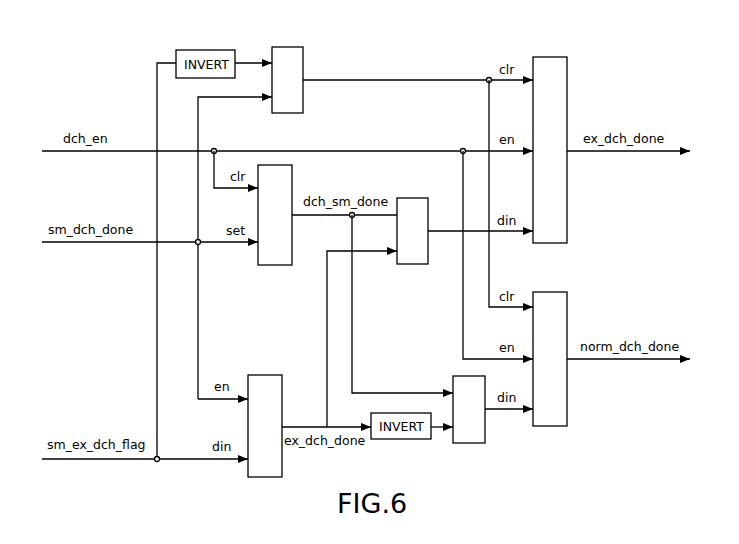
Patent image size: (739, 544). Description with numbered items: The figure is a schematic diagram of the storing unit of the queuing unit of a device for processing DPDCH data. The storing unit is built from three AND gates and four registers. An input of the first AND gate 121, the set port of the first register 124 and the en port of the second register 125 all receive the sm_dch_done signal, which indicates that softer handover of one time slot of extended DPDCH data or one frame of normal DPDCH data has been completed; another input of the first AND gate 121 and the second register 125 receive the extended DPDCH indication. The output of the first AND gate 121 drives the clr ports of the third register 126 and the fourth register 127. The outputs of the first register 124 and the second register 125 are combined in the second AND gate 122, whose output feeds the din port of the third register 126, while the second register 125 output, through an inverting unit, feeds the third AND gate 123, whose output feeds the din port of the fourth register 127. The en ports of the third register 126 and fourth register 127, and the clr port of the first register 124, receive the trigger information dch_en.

The first AND gate 121 is at (300, 47).
The second AND gate 122 is at (411, 264).
The third AND gate 123 is at (453, 378).
The first register 124 is at (272, 265).
The second register 125 is at (265, 375).
The third register 126 is at (550, 57).
The fourth register 127 is at (550, 292).